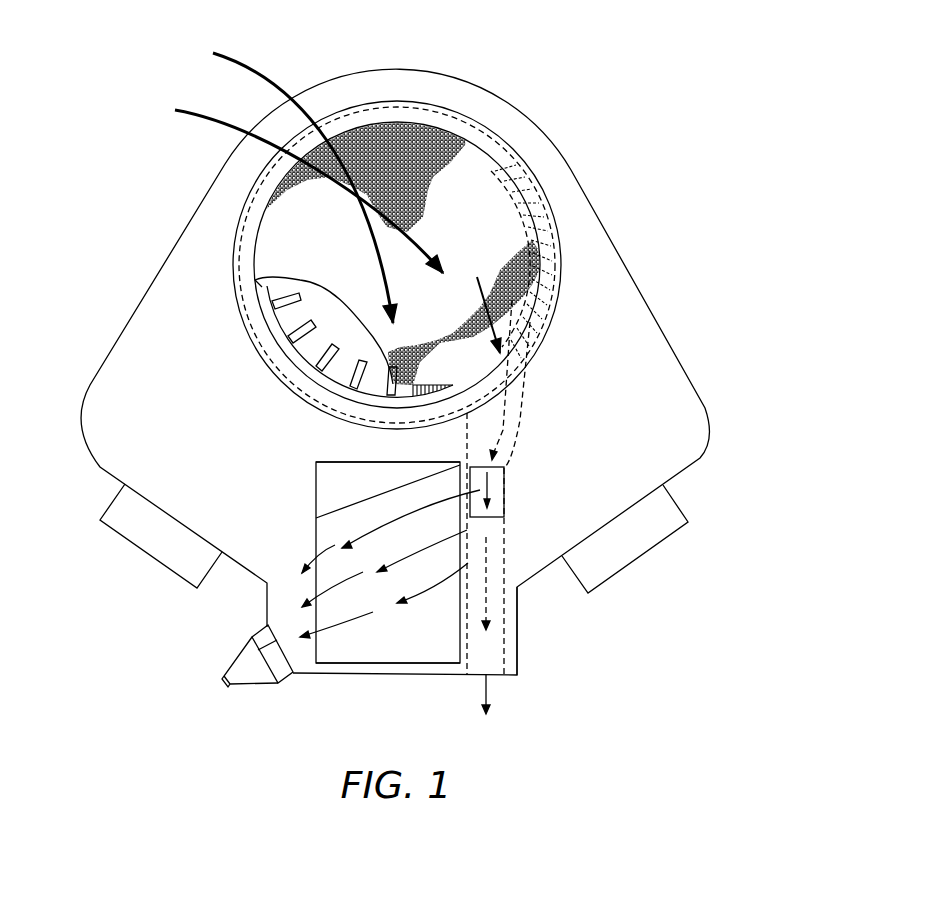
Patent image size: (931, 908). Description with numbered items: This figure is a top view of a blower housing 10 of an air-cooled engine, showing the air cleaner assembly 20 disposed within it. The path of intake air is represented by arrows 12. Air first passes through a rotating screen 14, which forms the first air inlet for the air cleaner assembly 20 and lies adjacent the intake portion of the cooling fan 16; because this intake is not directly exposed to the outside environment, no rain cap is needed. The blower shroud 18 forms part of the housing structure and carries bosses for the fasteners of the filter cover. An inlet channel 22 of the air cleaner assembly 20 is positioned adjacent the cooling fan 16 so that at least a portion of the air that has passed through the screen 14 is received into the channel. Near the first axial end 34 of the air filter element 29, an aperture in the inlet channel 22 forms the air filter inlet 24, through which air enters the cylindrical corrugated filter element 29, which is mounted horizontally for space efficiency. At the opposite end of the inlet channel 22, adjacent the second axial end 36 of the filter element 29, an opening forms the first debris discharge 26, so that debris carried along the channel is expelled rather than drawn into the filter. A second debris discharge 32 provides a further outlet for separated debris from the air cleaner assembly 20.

The blower housing 10 is at (633, 152).
The arrows 12 is at (283, 78).
The rotating screen 14 is at (437, 147).
The cooling fan 16 is at (267, 306).
The blower shroud 18 is at (613, 292).
The air cleaner assembly 20 is at (535, 640).
The inlet channel 22 is at (520, 423).
The air filter inlet 24 is at (504, 489).
The first debris discharge 26 is at (492, 677).
The air filter element 29 is at (325, 496).
The second debris discharge 32 is at (257, 653).
The first axial end 34 is at (378, 462).
The second axial end 36 is at (382, 665).